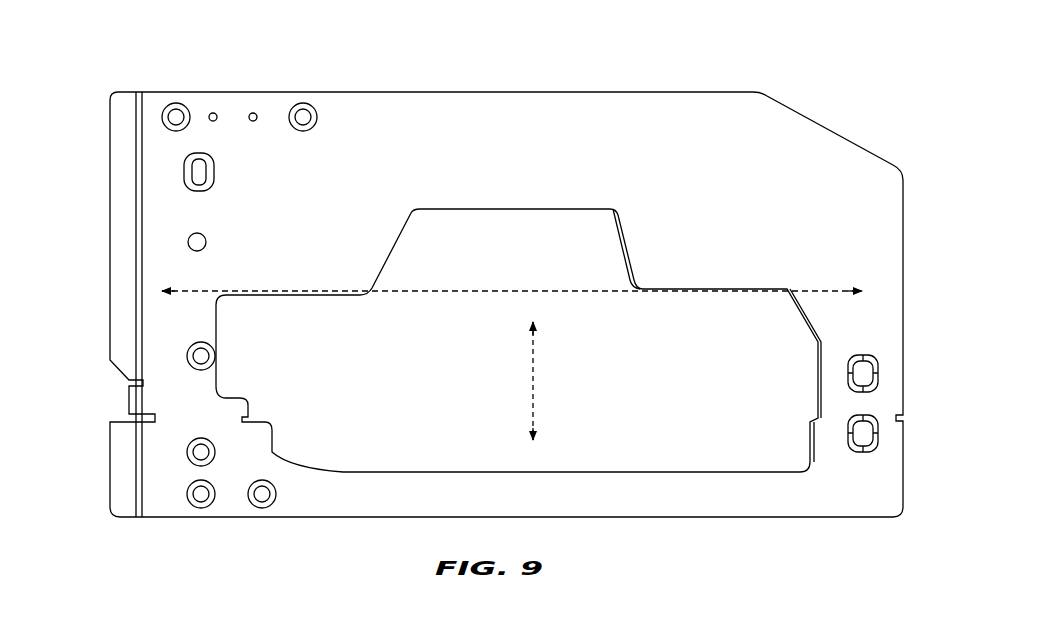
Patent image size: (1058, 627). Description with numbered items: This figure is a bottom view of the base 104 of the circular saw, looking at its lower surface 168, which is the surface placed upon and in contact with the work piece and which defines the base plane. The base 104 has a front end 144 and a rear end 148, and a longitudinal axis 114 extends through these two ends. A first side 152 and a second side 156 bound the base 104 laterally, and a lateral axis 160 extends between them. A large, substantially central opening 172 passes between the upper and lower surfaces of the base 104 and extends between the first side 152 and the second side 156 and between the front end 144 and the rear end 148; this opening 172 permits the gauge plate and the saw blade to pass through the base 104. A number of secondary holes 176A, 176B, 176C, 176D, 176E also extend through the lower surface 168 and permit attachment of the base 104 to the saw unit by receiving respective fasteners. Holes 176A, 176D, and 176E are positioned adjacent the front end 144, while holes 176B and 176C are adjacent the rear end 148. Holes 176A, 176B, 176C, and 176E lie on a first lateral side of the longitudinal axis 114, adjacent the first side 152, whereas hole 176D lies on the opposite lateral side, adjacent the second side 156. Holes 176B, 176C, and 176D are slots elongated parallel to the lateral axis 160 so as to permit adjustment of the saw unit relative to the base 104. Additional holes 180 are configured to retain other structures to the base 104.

The base 104 is at (506, 300).
The longitudinal axis 114 is at (460, 291).
The front end 144 is at (123, 78).
The rear end 148 is at (863, 119).
The first side 152 is at (661, 536).
The second side 156 is at (536, 80).
The lateral axis 160 is at (537, 390).
The lower surface 168 is at (683, 127).
The opening 172 is at (388, 447).
The hole 176A is at (188, 455).
The hole 176B is at (878, 373).
The hole 176C is at (878, 433).
The hole 176D is at (185, 176).
The hole 176E is at (187, 356).
The holes 180 is at (188, 116).